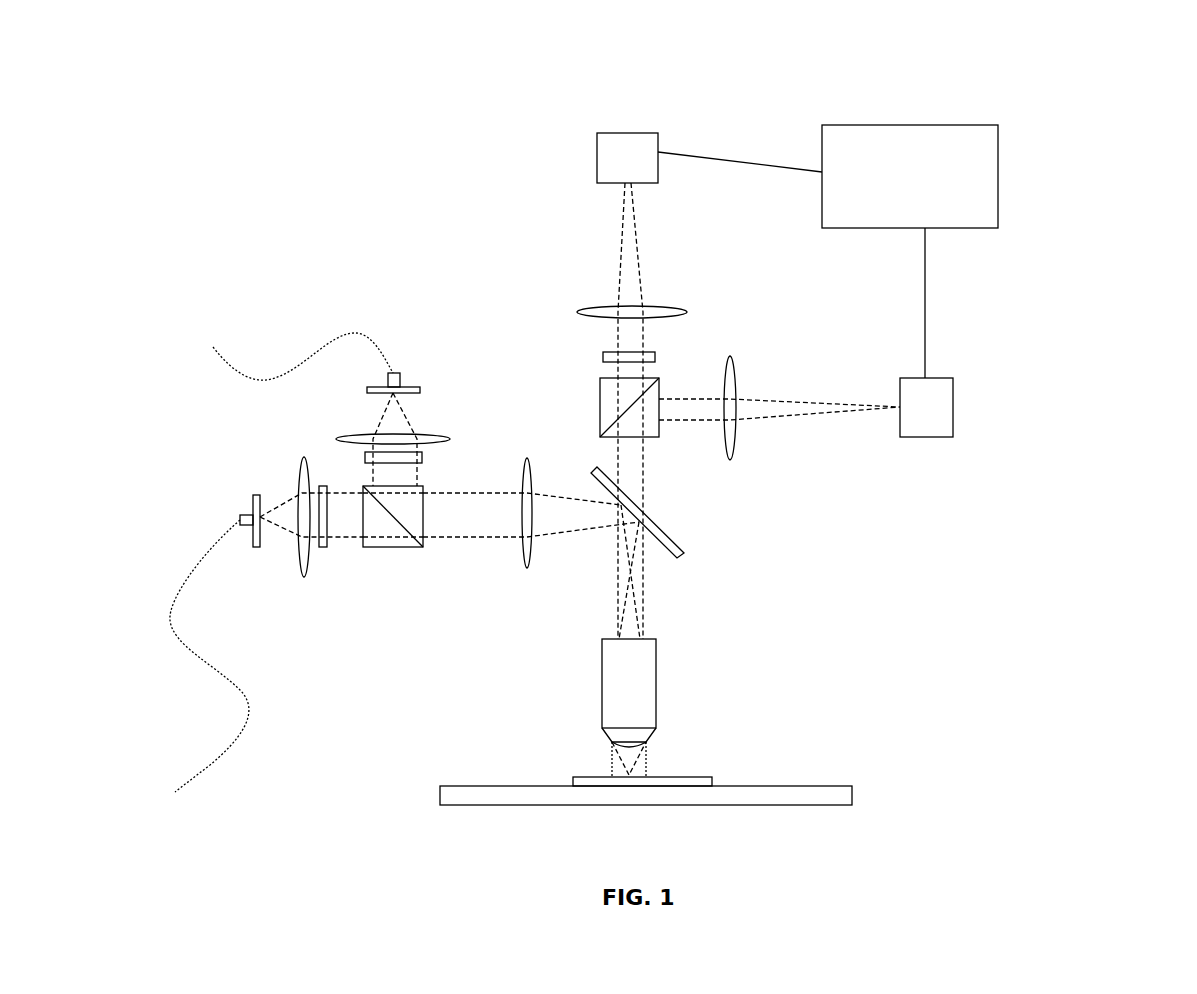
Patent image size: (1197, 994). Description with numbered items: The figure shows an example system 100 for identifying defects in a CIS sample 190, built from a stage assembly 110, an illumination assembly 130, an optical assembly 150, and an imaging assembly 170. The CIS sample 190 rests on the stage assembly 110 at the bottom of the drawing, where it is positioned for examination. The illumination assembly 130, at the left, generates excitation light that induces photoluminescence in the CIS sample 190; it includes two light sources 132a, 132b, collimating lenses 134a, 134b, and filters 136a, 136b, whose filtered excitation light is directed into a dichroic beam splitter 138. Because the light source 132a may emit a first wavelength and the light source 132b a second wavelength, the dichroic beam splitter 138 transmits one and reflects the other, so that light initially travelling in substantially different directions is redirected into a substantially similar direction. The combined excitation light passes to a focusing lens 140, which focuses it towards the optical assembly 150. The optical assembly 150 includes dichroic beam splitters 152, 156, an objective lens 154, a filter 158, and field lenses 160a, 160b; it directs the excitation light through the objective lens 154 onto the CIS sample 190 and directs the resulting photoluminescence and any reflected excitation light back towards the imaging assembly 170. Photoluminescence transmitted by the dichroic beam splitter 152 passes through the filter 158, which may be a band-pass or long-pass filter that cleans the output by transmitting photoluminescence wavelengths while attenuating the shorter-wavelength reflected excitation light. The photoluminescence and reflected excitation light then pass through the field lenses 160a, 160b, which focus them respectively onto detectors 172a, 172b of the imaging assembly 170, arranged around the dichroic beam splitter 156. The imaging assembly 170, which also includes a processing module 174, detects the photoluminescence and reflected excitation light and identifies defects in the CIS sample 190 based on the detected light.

The system 100 is at (305, 129).
The stage assembly 110 is at (922, 799).
The illumination assembly 130 is at (351, 305).
The light source 132a is at (258, 495).
The light source 132b is at (410, 388).
The collimating lens 134a is at (304, 550).
The collimating lens 134b is at (420, 437).
The filter 136a is at (323, 546).
The filter 136b is at (423, 458).
The dichroic beam splitter 138 is at (388, 538).
The focusing lens 140 is at (527, 545).
The optical assembly 150 is at (790, 620).
The dichroic beam splitter 152 is at (660, 538).
The objective lens 154 is at (645, 690).
The dichroic beam splitter 156 is at (610, 397).
The filter 158 is at (647, 357).
The field lens 160a is at (650, 310).
The field lens 160b is at (732, 382).
The imaging assembly 170 is at (1057, 276).
The detector 172a is at (618, 156).
The detector 172b is at (935, 395).
The processing module 174 is at (926, 186).
The CIS sample 190 is at (705, 780).